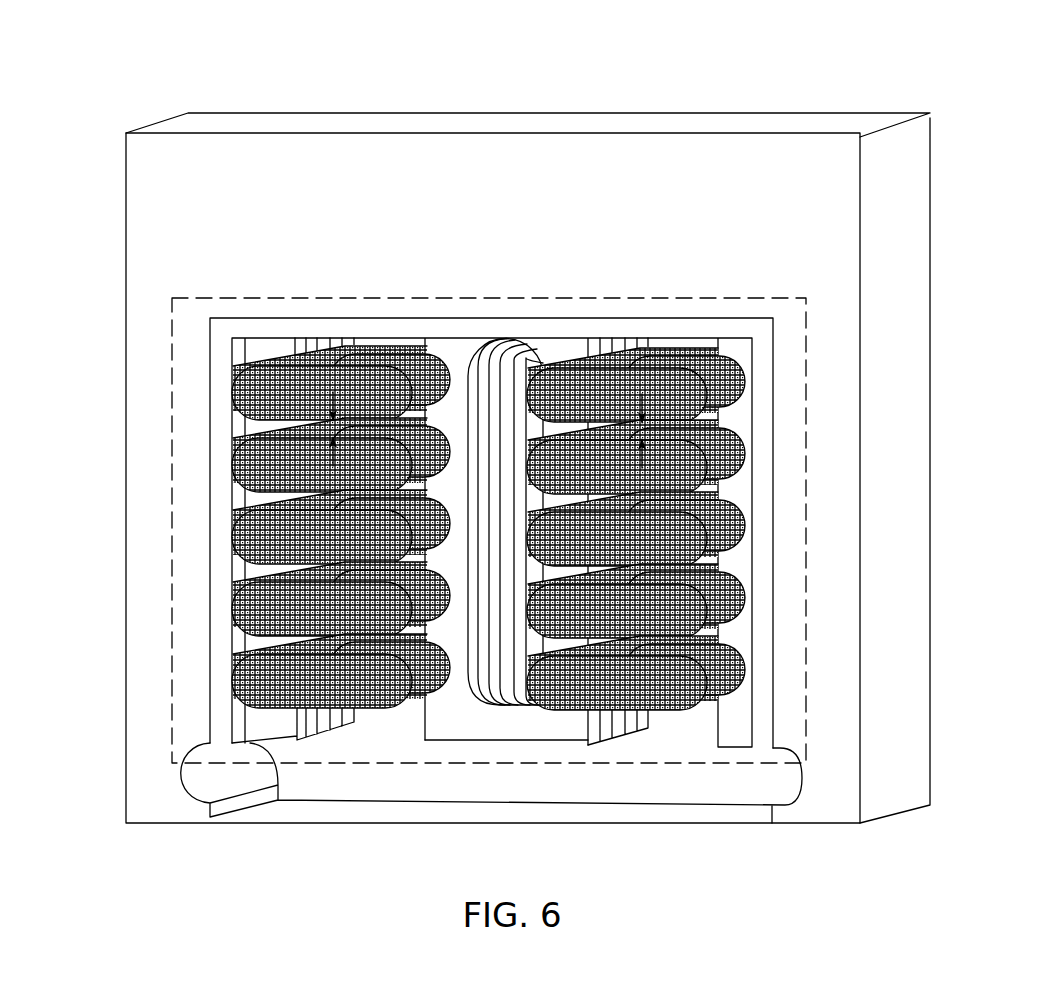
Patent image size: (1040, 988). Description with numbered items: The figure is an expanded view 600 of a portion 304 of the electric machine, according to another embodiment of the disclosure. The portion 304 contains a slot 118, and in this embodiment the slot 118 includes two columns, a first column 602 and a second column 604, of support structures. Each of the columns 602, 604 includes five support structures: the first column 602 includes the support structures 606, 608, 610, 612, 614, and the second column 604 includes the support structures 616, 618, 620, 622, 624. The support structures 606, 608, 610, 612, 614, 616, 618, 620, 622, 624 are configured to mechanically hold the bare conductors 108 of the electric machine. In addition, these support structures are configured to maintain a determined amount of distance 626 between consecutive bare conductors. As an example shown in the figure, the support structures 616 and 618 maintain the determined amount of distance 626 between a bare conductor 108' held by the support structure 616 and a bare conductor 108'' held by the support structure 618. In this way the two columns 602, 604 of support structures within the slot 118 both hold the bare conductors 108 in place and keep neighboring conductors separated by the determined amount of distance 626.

The expanded view 600 is at (242, 66).
The portion 304 is at (158, 190).
The first column 602 is at (365, 335).
The second column 604 is at (698, 330).
The support structure 606 is at (268, 352).
The support structure 608 is at (257, 426).
The support structure 610 is at (255, 498).
The support structure 612 is at (255, 570).
The support structure 614 is at (255, 642).
The support structure 616 is at (740, 365).
The support structure 618 is at (740, 433).
The support structure 620 is at (738, 502).
The support structure 622 is at (737, 567).
The support structure 624 is at (737, 637).
The determined amount of distance 626 is at (337, 425).
The bare conductor 108' is at (767, 331).
The bare conductor 108'' is at (768, 467).
The bare conductors 108 is at (617, 762).
The slot 118 is at (388, 738).